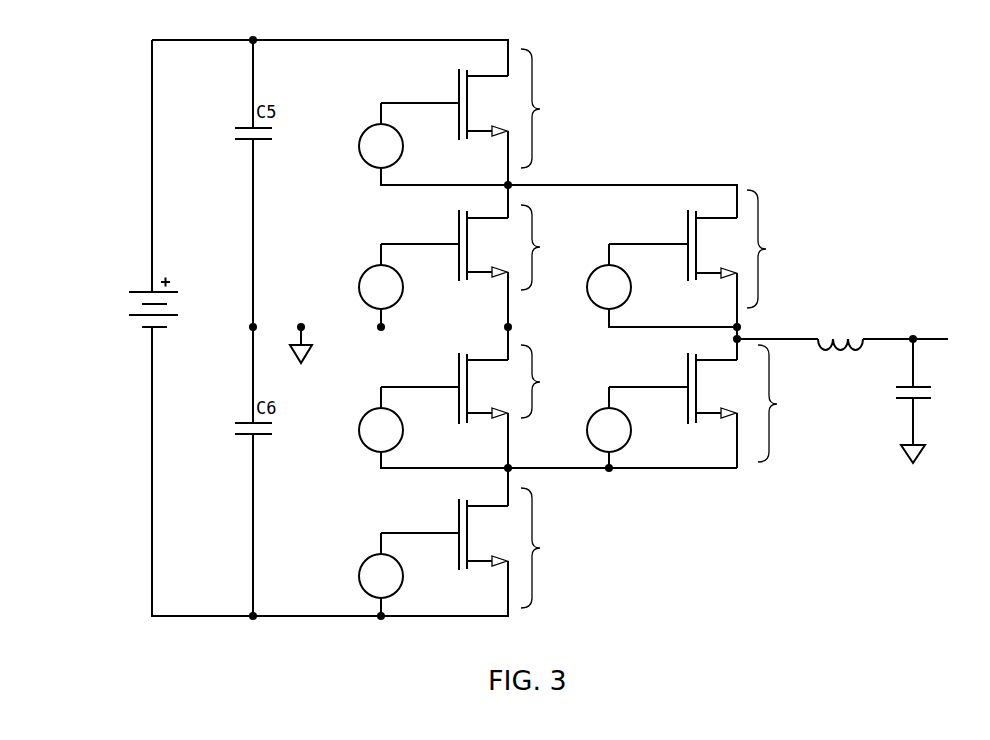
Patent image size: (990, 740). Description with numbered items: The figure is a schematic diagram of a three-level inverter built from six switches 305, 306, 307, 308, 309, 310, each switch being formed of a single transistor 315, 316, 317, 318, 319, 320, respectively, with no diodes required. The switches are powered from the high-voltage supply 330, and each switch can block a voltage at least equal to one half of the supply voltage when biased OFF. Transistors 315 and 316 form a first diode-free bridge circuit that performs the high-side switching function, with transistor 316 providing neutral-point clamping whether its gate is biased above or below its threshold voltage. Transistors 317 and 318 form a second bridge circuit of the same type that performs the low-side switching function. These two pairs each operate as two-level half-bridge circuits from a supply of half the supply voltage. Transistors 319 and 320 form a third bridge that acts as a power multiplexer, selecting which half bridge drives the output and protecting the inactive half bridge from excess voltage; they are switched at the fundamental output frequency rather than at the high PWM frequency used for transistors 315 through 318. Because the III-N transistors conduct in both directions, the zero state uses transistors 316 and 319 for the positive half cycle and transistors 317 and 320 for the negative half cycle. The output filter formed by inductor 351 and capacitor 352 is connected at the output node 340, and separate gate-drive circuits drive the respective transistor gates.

The switch 305 is at (452, 117).
The switch 306 is at (449, 265).
The switch 307 is at (452, 406).
The switch 308 is at (450, 552).
The switch 309 is at (680, 258).
The switch 310 is at (667, 406).
The transistor 315 is at (455, 99).
The transistor 316 is at (455, 239).
The transistor 317 is at (455, 383).
The transistor 318 is at (455, 528).
The output transistor 319 is at (684, 239).
The output transistor 320 is at (684, 383).
The high-voltage supply 330 is at (128, 305).
The output node 340 is at (914, 336).
The inductor 351 is at (840, 336).
The capacitor 352 is at (916, 385).